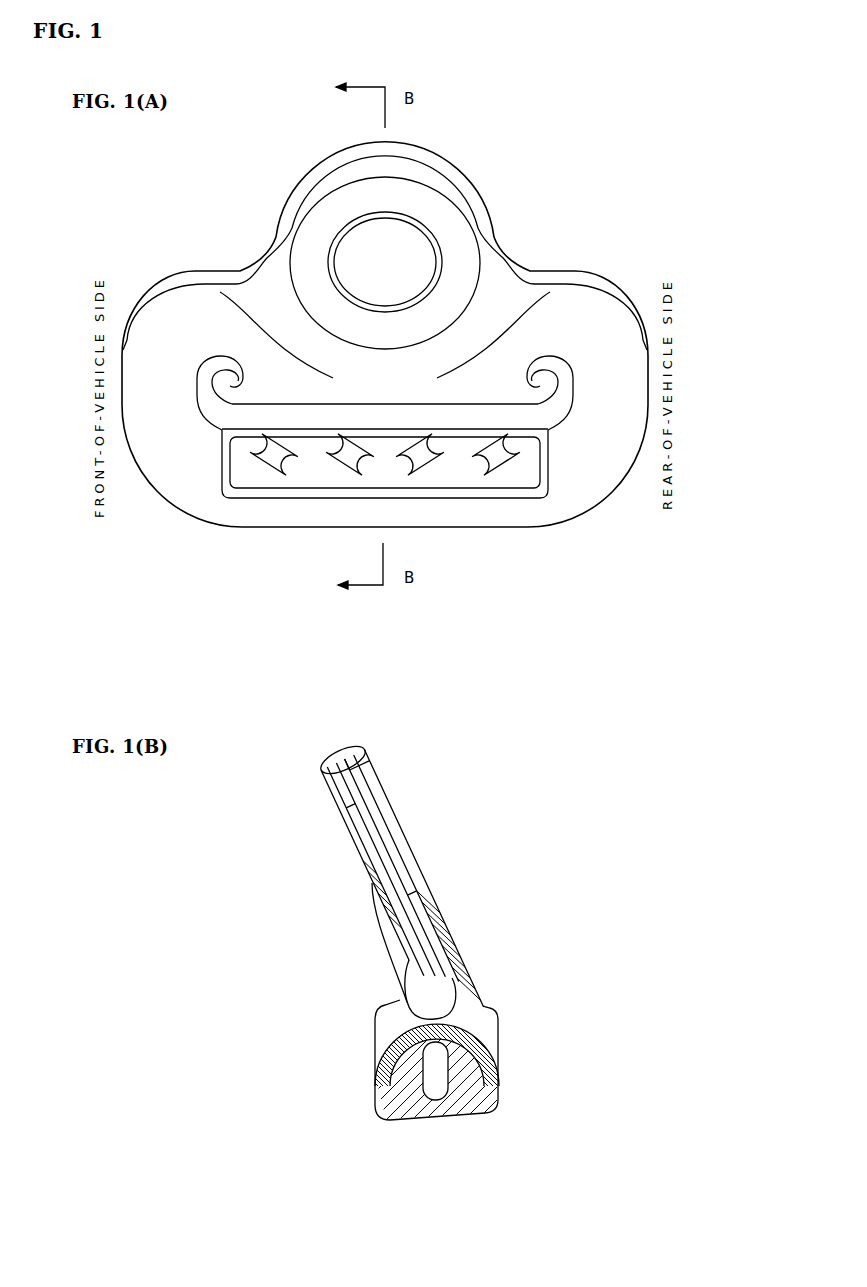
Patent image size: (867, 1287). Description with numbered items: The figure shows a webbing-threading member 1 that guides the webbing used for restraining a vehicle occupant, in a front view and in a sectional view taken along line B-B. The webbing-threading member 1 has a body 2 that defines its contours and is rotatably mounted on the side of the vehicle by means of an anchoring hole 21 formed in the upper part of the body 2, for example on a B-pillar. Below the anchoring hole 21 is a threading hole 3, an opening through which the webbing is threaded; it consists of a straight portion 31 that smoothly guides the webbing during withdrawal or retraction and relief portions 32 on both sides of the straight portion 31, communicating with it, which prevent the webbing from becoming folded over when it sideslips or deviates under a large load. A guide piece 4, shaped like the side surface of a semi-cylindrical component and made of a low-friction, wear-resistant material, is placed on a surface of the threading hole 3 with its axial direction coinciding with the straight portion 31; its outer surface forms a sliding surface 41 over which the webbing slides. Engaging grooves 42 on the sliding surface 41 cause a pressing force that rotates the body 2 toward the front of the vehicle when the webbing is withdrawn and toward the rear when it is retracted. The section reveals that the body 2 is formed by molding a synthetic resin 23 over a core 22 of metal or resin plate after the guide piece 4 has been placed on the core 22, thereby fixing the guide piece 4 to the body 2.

In FIG. 1A, the webbing-threading member 1 is at (497, 168).
In FIG. 1B, the webbing-threading member 1 is at (463, 790).
In FIG. 1A, the body 2 is at (568, 272).
In FIG. 1B, the body 2 is at (419, 858).
In FIG. 1A, the anchoring hole 21 is at (340, 258).
In FIG. 1B, the anchoring hole 21 is at (394, 824).
In FIG. 1B, the core 22 is at (435, 912).
In FIG. 1B, the synthetic resin 23 is at (459, 948).
In FIG. 1A, the threading hole 3 is at (199, 412).
In FIG. 1B, the threading hole 3 is at (394, 1013).
In FIG. 1A, the straight portion 31 is at (380, 404).
In FIG. 1A, the relief portions 32 is at (196, 372).
In FIG. 1A, the guide piece 4 is at (258, 504).
In FIG. 1B, the guide piece 4 is at (385, 1042).
In FIG. 1A, the sliding surface 41 is at (539, 459).
In FIG. 1B, the sliding surface 41 is at (491, 1049).
In FIG. 1A, the engaging grooves 42 is at (344, 463).
In FIG. 1B, the engaging grooves 42 is at (458, 1014).